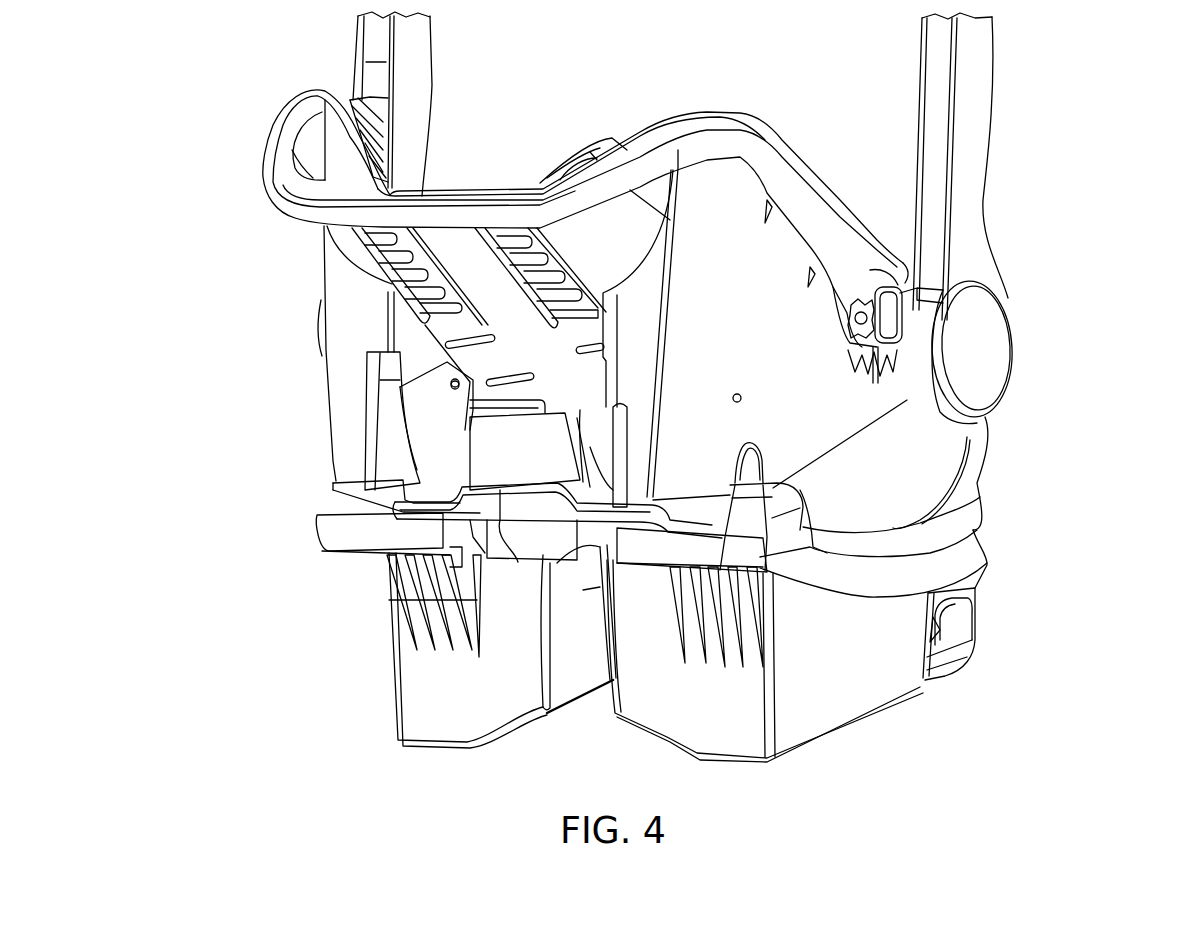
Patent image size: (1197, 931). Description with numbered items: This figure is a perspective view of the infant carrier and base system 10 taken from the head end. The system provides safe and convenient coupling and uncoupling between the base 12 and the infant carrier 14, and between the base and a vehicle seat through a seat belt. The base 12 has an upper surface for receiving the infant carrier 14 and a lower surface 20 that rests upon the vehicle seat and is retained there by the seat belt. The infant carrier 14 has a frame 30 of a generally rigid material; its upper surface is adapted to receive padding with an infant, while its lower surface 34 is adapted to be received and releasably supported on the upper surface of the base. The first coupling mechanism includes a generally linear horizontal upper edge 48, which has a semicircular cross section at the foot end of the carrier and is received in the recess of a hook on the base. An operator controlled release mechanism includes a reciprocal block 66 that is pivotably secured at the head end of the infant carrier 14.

The infant carrier and base system 10 is at (1058, 129).
The base 12 is at (887, 700).
The infant carrier 14 is at (833, 213).
The lower surface 20 is at (837, 733).
The frame 30 is at (858, 428).
The lower surface 34 is at (825, 460).
The upper edge 48 is at (518, 560).
The reciprocal block 66 is at (480, 452).